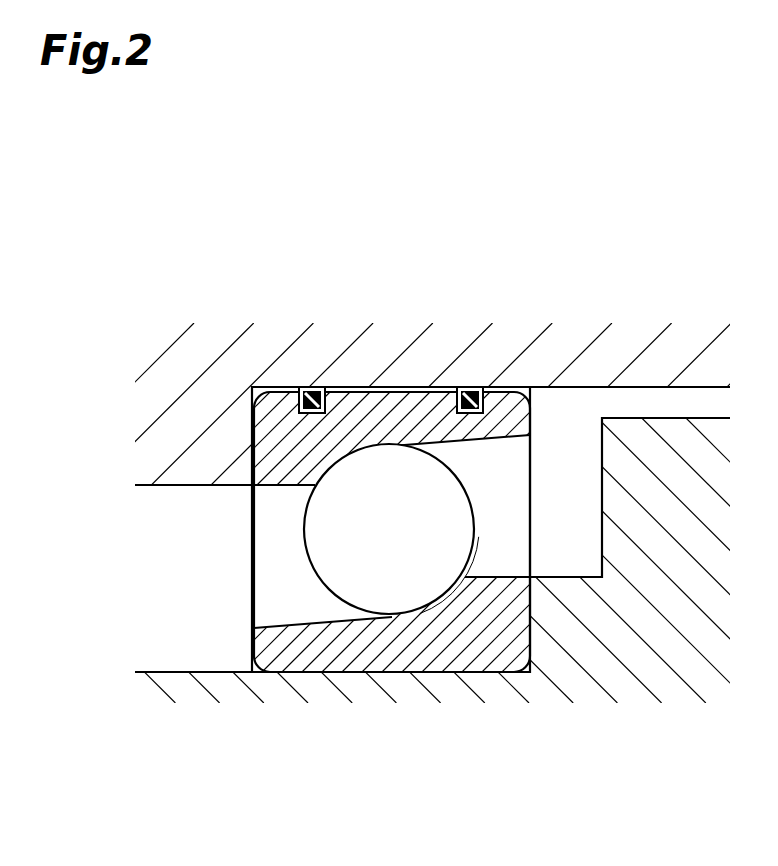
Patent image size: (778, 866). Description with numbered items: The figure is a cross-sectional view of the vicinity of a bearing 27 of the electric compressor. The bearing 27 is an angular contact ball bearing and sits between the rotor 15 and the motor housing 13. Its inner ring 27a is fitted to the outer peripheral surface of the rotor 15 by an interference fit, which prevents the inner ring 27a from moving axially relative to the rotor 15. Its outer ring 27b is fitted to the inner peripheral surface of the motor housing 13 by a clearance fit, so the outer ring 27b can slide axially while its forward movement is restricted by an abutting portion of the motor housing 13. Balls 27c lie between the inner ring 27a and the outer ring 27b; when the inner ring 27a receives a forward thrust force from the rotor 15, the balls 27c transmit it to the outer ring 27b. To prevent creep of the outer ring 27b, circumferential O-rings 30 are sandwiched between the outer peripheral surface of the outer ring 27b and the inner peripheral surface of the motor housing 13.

The motor housing 13 is at (598, 367).
The rotor 15 is at (603, 682).
The bearing 27 is at (341, 684).
The inner ring 27a is at (286, 650).
The outer ring 27b is at (267, 430).
The balls 27c is at (410, 590).
The O-rings 30 is at (316, 395).